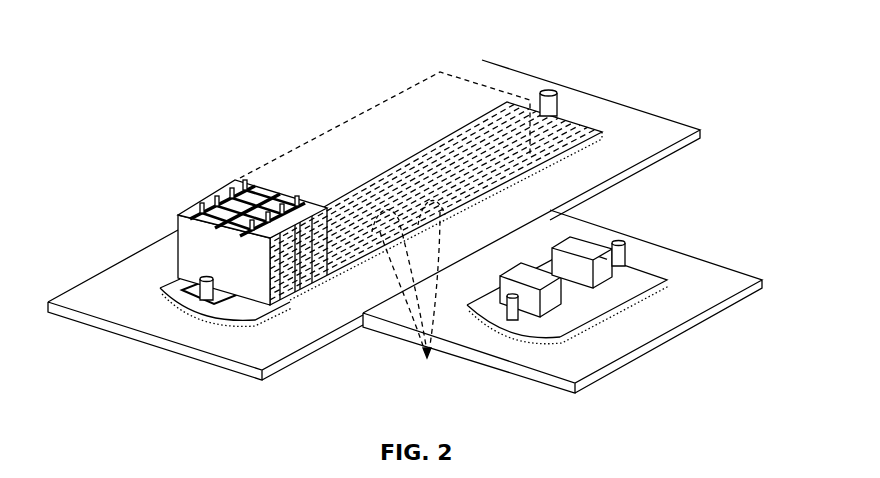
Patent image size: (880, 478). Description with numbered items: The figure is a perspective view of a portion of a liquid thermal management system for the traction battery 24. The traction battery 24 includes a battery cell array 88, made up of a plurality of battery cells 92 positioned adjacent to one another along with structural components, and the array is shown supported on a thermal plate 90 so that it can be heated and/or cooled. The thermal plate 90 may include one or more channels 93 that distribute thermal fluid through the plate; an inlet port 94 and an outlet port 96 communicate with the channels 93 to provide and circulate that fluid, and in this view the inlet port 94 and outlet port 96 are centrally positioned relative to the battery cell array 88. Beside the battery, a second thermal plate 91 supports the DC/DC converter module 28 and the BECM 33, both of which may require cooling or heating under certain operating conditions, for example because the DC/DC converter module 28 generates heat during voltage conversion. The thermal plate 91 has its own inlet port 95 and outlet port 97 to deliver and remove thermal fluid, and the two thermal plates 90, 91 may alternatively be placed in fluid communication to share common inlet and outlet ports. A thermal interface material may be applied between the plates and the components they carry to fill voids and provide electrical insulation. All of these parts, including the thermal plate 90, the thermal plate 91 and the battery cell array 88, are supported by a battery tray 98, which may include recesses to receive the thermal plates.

The traction battery 24 is at (290, 126).
The battery cell array 88 is at (381, 92).
The battery cells 92 is at (245, 182).
The battery tray 98 is at (670, 127).
The inlet port 94 is at (557, 118).
The inlet port 95 is at (619, 241).
The outlet port 96 is at (208, 293).
The outlet port 97 is at (507, 304).
The BECM 33 is at (573, 243).
The DC/DC converter module 28 is at (518, 276).
The thermal plate 91 is at (583, 307).
The thermal plate 90 is at (258, 310).
The channels 93 is at (408, 296).